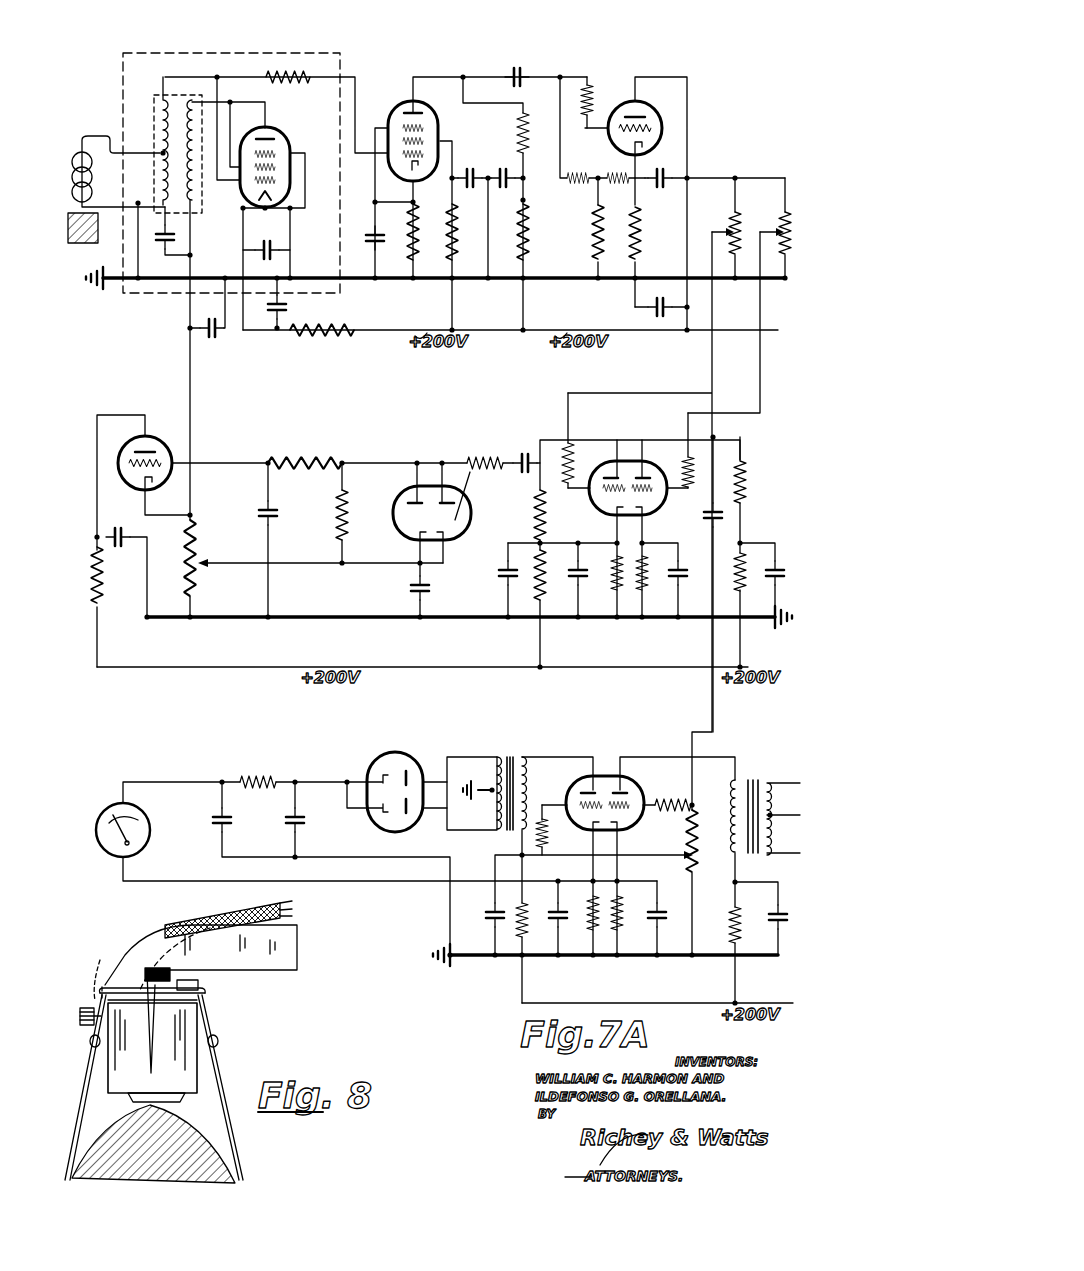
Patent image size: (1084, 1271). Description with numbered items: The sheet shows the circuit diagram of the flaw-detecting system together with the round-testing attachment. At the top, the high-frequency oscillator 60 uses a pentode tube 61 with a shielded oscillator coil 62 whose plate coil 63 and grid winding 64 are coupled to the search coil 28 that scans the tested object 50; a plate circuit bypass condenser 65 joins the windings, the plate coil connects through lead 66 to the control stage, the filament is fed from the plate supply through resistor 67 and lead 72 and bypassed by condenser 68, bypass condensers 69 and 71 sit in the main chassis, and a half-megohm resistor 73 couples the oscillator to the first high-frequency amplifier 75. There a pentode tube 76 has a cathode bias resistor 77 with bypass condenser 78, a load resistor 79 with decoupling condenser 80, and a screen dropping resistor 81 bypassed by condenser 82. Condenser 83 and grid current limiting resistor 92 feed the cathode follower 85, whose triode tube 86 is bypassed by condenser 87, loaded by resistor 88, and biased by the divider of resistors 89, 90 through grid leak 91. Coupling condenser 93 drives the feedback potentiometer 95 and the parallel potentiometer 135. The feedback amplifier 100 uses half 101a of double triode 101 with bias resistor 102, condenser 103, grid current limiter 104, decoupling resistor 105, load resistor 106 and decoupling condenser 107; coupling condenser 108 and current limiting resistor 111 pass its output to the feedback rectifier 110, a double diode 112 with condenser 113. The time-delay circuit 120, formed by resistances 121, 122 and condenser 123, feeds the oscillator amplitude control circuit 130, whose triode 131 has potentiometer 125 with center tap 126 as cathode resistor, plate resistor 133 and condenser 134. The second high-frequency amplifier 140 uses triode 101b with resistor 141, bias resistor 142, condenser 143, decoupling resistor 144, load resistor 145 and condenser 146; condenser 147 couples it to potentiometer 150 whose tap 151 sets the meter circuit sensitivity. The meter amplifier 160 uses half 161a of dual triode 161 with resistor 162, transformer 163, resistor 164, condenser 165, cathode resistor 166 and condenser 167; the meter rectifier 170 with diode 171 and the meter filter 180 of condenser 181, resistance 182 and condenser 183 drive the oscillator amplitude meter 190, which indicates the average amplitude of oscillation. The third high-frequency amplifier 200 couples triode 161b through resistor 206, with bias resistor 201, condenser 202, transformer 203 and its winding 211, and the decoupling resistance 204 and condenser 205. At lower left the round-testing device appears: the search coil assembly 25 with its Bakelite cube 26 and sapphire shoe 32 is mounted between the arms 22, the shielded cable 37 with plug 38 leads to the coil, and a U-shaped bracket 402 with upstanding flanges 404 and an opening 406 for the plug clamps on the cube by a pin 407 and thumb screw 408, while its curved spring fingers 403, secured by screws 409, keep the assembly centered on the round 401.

In FIG. 7A, the search coil 28 is at (72, 194).
In FIG. 7A, the tested object 50 is at (68, 244).
In FIG. 7A, the high-frequency oscillator 60 is at (231, 155).
In FIG. 7A, the pentode tube 61 is at (282, 134).
In FIG. 7A, the oscillator coil 62 is at (159, 136).
In FIG. 7A, the plate coil 63 is at (203, 193).
In FIG. 7A, the grid winding 64 is at (166, 94).
In FIG. 7A, the plate circuit bypass condenser 65 is at (160, 244).
In FIG. 7A, the lead 66 is at (180, 323).
In FIG. 7A, the resistor 67 is at (343, 318).
In FIG. 7A, the condenser 68 is at (266, 244).
In FIG. 7A, the bypass condenser 69 is at (214, 342).
In FIG. 7A, the bypass condenser 71 is at (290, 308).
In FIG. 7A, the lead 72 is at (252, 340).
In FIG. 7A, the half-megohm resistor 73 is at (300, 72).
In FIG. 7A, the first high-frequency amplifier circuit 75 is at (463, 175).
In FIG. 7A, the pentode voltage amplifying tube 76 is at (394, 102).
In FIG. 7A, the cathode bias resistor 77 is at (417, 245).
In FIG. 7A, the bypass condenser 78 is at (372, 248).
In FIG. 7A, the load resistor 79 is at (520, 120).
In FIG. 7A, the condenser 80 is at (506, 168).
In FIG. 7A, the dropping resistor 81 is at (454, 232).
In FIG. 7A, the condenser 82 is at (470, 168).
In FIG. 7A, the condenser 83 is at (521, 64).
In FIG. 7A, the cathode follower 85 is at (637, 175).
In FIG. 7A, the triode amplifying tube 86 is at (648, 105).
In FIG. 7A, the condenser 87 is at (660, 286).
In FIG. 7A, the load resistor 88 is at (642, 212).
In FIG. 7A, the resistor 89 is at (616, 173).
In FIG. 7A, the resistor 90 is at (592, 225).
In FIG. 7A, the grid leak 91 is at (580, 180).
In FIG. 7A, the grid current limiting resistor 92 is at (588, 80).
In FIG. 7A, the condenser 93 is at (665, 168).
In FIG. 7A, the potentiometer 95 is at (737, 220).
In FIG. 7A, the feedback amplifier 100 is at (577, 513).
In FIG. 7A, the double triode 101 is at (630, 448).
In FIG. 7A, the triode half 101a is at (598, 466).
In FIG. 7A, the triode amplifier 101b is at (659, 466).
In FIG. 7A, the bias resistor 102 is at (613, 582).
In FIG. 7A, the condenser 103 is at (574, 586).
In FIG. 7A, the grid current limiter 104 is at (572, 493).
In FIG. 7A, the plate circuit decoupling resistor 105 is at (544, 558).
In FIG. 7A, the load resistor 106 is at (564, 516).
In FIG. 7A, the plate circuit decoupling condenser 107 is at (506, 586).
In FIG. 7A, the coupling condenser 108 is at (524, 450).
In FIG. 7A, the feedback rectifier 110 is at (541, 490).
In FIG. 7A, the current limiting resistor 111 is at (476, 456).
In FIG. 7A, the double diode 112 is at (397, 503).
In FIG. 7A, the condenser 113 is at (406, 590).
In FIG. 7A, the time-delay circuit 120 is at (307, 428).
In FIG. 7A, the resistance 121 is at (348, 518).
In FIG. 7A, the resistance 122 is at (309, 467).
In FIG. 7A, the condenser 123 is at (280, 520).
In FIG. 7A, the potentiometer 125 is at (190, 569).
In FIG. 7A, the variable center tap 126 is at (216, 552).
In FIG. 7A, the oscillator amplitude control circuit 130 is at (136, 410).
In FIG. 7A, the triode 131 is at (128, 440).
In FIG. 7A, the resistor 133 is at (88, 578).
In FIG. 7A, the condenser 134 is at (118, 530).
In FIG. 7A, the potentiometer 135 is at (787, 208).
In FIG. 7A, the second high-frequency amplifier 140 is at (665, 406).
In FIG. 7A, the current limiting resistor 141 is at (690, 486).
In FIG. 7A, the resistor 142 is at (648, 582).
In FIG. 7A, the condenser 143 is at (680, 551).
In FIG. 7A, the decoupling resistor 144 is at (742, 578).
In FIG. 7A, the plate loading resistor 145 is at (748, 469).
In FIG. 7A, the decoupling condenser 146 is at (780, 560).
In FIG. 7A, the condenser 147 is at (704, 516).
In FIG. 7A, the potentiometer 150 is at (695, 824).
In FIG. 7A, the variable tap 151 is at (672, 853).
In FIG. 7A, the meter amplifier 160 is at (583, 736).
In FIG. 7A, the dual triode 161 is at (614, 764).
In FIG. 7A, the triode half 161a is at (568, 786).
In FIG. 7A, the triode 161b is at (644, 786).
In FIG. 7A, the grid current limiting resistor 162 is at (546, 837).
In FIG. 7A, the one-to-one ratio transformer 163 is at (516, 757).
In FIG. 7A, the plate circuit decoupling and voltage dropping resistor 164 is at (524, 928).
In FIG. 7A, the plate circuit decoupling condenser 165 is at (490, 913).
In FIG. 7A, the cathode bias resistor 166 is at (593, 922).
In FIG. 7A, the condenser 167 is at (558, 913).
In FIG. 7A, the meter rectifier 170 is at (411, 773).
In FIG. 7A, the diode rectifier 171 is at (410, 836).
In FIG. 7A, the meter filter circuit 180 is at (311, 822).
In FIG. 7A, the condenser 181 is at (310, 826).
In FIG. 7A, the resistance 182 is at (266, 784).
In FIG. 7A, the condenser 183 is at (210, 820).
In FIG. 7A, the oscillator amplitude meter 190 is at (96, 812).
In FIG. 7A, the third high-frequency amplifier 200 is at (674, 736).
In FIG. 7A, the resistor 201 is at (620, 908).
In FIG. 7A, the condenser 202 is at (680, 868).
In FIG. 7A, the one-to-one ratio transformer 203 is at (748, 770).
In FIG. 7A, the resistance 204 is at (733, 926).
In FIG. 7A, the condenser 205 is at (780, 934).
In FIG. 7A, the resistor 206 is at (684, 828).
In FIG. 7A, the output transformer secondary 211 is at (770, 780).
In FIG. 8, the strips 22 is at (298, 952).
In FIG. 8, the search coil assembly 25 is at (202, 1073).
In FIG. 8, the Bakelite cube 26 is at (104, 1066).
In FIG. 8, the synthetic sapphire shoe 32 is at (130, 1093).
In FIG. 8, the shielded flexible cable 37 is at (292, 906).
In FIG. 8, the plug 38 is at (173, 975).
In FIG. 8, the round 401 is at (214, 1144).
In FIG. 8, the U-shaped sheet metal bracket 402 is at (200, 1018).
In FIG. 8, the curved spring fingers 403 is at (210, 1097).
In FIG. 8, the upstanding flanges 404 is at (198, 986).
In FIG. 8, the opening 406 is at (108, 973).
In FIG. 8, the pin 407 is at (200, 1002).
In FIG. 8, the thumb screw 408 is at (80, 1020).
In FIG. 8, the screws 409 is at (90, 1041).